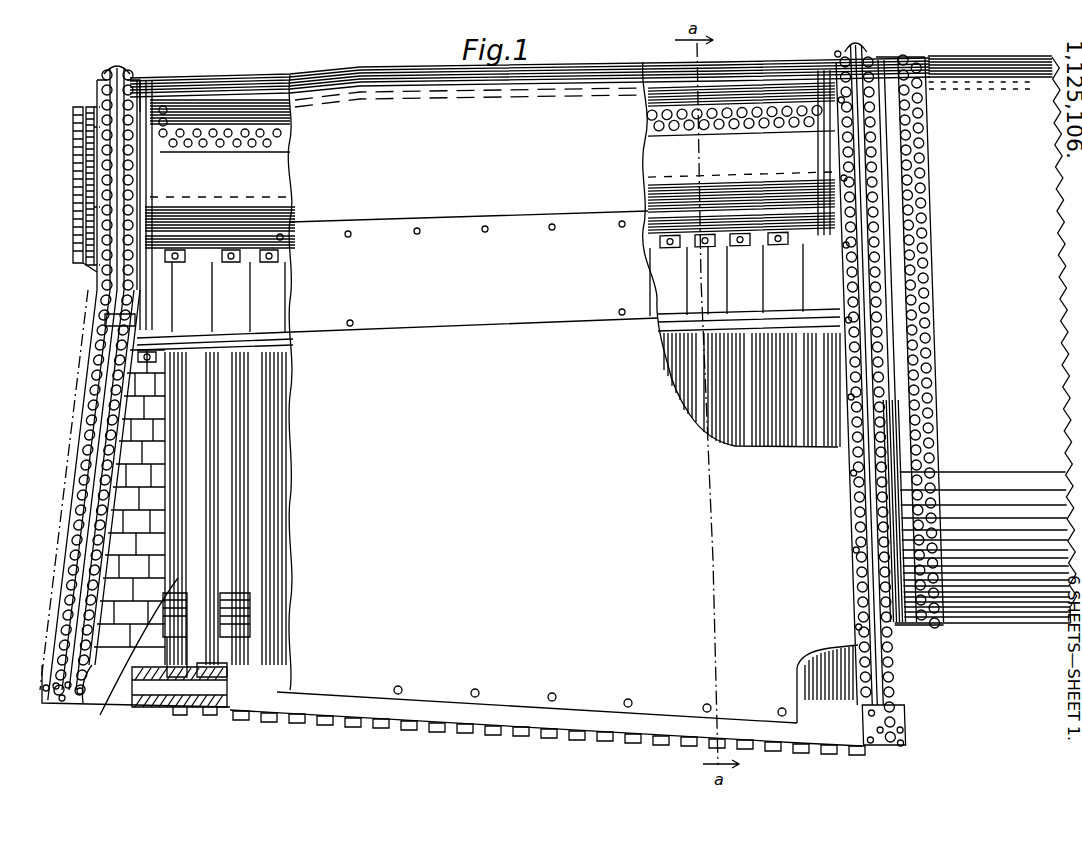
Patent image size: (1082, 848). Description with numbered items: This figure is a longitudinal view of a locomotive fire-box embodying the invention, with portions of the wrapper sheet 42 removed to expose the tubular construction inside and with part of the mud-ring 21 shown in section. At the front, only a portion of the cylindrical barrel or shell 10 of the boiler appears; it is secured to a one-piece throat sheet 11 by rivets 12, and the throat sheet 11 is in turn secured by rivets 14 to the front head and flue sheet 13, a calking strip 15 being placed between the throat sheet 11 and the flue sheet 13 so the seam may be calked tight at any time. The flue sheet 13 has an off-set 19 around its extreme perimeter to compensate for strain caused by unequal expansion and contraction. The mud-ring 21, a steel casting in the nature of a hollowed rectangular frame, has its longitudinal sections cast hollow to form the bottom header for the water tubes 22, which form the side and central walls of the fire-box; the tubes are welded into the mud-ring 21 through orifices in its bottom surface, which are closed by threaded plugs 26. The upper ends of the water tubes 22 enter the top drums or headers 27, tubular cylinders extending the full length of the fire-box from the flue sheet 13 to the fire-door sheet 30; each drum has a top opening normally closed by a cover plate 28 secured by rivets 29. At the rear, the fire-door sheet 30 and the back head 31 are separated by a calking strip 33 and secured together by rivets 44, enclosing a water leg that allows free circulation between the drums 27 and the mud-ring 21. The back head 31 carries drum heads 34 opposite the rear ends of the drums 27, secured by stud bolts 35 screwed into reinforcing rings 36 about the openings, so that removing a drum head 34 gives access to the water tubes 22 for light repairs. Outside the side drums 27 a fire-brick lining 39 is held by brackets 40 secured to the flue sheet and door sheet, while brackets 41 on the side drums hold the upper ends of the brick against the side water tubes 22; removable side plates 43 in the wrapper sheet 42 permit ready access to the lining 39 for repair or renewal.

The cylindrical barrel or shell 10 is at (977, 60).
The throat sheet 11 is at (879, 60).
The rivets 12 is at (915, 58).
The front head and flue sheet 13 is at (847, 56).
The rivets 14 is at (865, 50).
The calking strip 15 is at (856, 45).
The off-set 19 is at (834, 54).
The mud-ring 21 is at (403, 706).
The water tubes 22 is at (857, 757).
The threaded plugs 26 is at (212, 716).
The drums or headers 27 is at (487, 200).
The cover plates 28 is at (215, 112).
The rivets 29 is at (238, 146).
The fire-door sheet 30 is at (87, 512).
The back head 31 is at (87, 478).
The calking strip 33 is at (114, 68).
The drum heads 34 is at (73, 170).
The stud bolts 35 is at (86, 222).
The reinforcing rings 36 is at (96, 270).
The fire-brick lining 39 is at (712, 262).
The brackets 40 is at (140, 342).
The brackets 41 is at (200, 277).
The wrapper sheet 42 is at (318, 78).
The side plates 43 is at (467, 271).
The rivets 44 is at (138, 80).